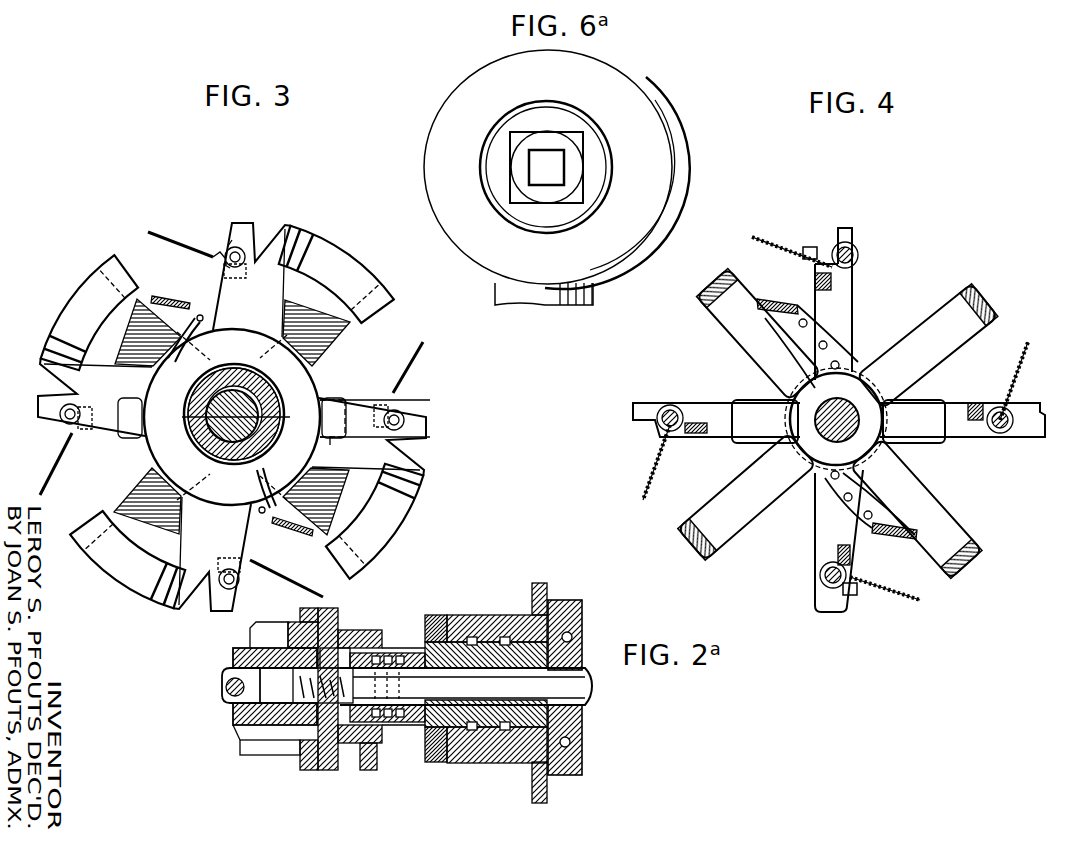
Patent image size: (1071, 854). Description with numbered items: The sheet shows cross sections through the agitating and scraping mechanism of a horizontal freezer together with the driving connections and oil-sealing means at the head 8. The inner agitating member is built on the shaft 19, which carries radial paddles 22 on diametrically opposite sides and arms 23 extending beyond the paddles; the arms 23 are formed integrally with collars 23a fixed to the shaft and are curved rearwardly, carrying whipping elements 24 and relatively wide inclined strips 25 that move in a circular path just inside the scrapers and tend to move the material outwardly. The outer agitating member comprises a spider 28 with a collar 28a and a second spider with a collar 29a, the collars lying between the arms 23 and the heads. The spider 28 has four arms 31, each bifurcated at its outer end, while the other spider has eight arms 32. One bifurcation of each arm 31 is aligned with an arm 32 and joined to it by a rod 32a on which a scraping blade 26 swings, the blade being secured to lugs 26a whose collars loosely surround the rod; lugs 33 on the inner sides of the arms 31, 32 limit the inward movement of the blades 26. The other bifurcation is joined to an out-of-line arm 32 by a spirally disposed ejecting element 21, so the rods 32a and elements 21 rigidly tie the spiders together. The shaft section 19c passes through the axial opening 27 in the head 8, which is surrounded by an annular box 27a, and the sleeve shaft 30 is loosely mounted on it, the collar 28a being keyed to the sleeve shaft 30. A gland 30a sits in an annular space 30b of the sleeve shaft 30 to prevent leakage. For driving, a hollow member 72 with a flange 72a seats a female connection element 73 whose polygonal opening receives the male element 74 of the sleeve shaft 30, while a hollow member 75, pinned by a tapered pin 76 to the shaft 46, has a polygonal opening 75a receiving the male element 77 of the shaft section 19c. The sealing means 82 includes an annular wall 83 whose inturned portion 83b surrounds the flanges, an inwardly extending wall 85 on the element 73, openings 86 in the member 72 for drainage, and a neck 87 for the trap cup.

In FIG. 2A, the head 8 is at (538, 584).
In FIG. 3, the shaft 19 is at (250, 416).
In FIG. 4, the shaft 19 is at (852, 403).
In FIG. 2A, the shaft section 19c is at (590, 692).
In FIG. 3, the material ejecting element 21 is at (355, 268).
In FIG. 4, the material ejecting element 21 is at (728, 272).
In FIG. 3, the radial paddle 22 is at (348, 428).
In FIG. 4, the radial paddle 22 is at (743, 402).
In FIG. 3, the arm 23 is at (231, 413).
In FIG. 4, the arm 23 is at (796, 326).
In FIG. 4, the collar 23a is at (875, 332).
In FIG. 3, the whipping element 24 is at (212, 320).
In FIG. 4, the whipping element 24 is at (840, 362).
In FIG. 3, the whipping strip 25 is at (178, 298).
In FIG. 4, the whipping strip 25 is at (778, 299).
In FIG. 3, the scraping blade 26 is at (168, 232).
In FIG. 4, the scraping blade 26 is at (767, 237).
In FIG. 3, the lug 26a is at (214, 248).
In FIG. 4, the lug 26a is at (820, 248).
In FIG. 2A, the axial opening 27 is at (505, 764).
In FIG. 2A, the annular box 27a is at (506, 626).
In FIG. 3, the spider 28 is at (375, 392).
In FIG. 3, the collar 28a is at (362, 398).
In FIG. 2A, the collar 28a is at (584, 614).
In FIG. 4, the collar 29a is at (808, 386).
In FIG. 3, the sleeve shaft 30 is at (182, 418).
In FIG. 2A, the sleeve shaft 30 is at (602, 724).
In FIG. 2A, the gland 30a is at (448, 648).
In FIG. 2A, the annular space 30b is at (442, 762).
In FIG. 3, the arm 31 is at (268, 305).
In FIG. 3, the arm 32 is at (150, 298).
In FIG. 4, the arm 32 is at (692, 294).
In FIG. 3, the rod 32a is at (235, 222).
In FIG. 4, the rod 32a is at (858, 262).
In FIG. 3, the lug 33 is at (240, 264).
In FIG. 4, the lug 33 is at (813, 280).
In FIG. 2A, the shaft 46 is at (222, 693).
In FIG. 2A, the hollow member 72 is at (298, 756).
In FIG. 2A, the flange 72a is at (310, 770).
In FIG. 6A, the female connection element 73 is at (598, 176).
In FIG. 2A, the female connection element 73 is at (380, 632).
In FIG. 2A, the male connection element 74 is at (388, 652).
In FIG. 6A, the hollow member 75 is at (528, 184).
In FIG. 2A, the hollow member 75 is at (233, 712).
In FIG. 6A, the polygonal opening 75a is at (548, 150).
In FIG. 2A, the polygonal opening 75a is at (233, 665).
In FIG. 2A, the tapered pin 76 is at (222, 690).
In FIG. 2A, the male connection element 77 is at (306, 685).
In FIG. 6A, the lubricant leakage preventing means 82 is at (640, 102).
In FIG. 6A, the annular wall 83 is at (656, 130).
In FIG. 6A, the inturned wall 83b is at (592, 256).
In FIG. 2A, the inturned wall 83b is at (365, 765).
In FIG. 2A, the inwardly extending wall 85 is at (345, 628).
In FIG. 2A, the opening 86 is at (258, 752).
In FIG. 6A, the neck 87 is at (558, 298).